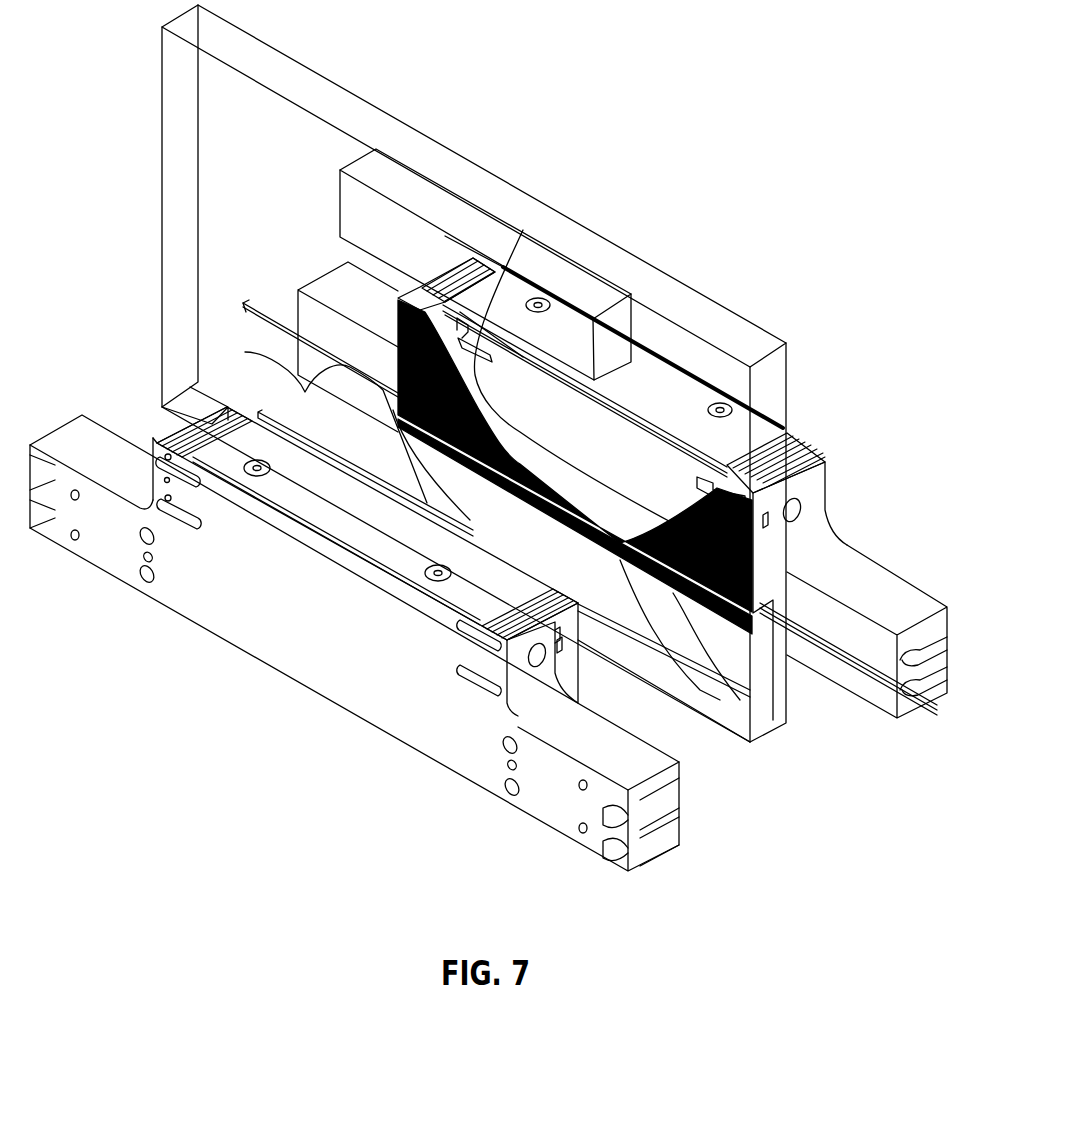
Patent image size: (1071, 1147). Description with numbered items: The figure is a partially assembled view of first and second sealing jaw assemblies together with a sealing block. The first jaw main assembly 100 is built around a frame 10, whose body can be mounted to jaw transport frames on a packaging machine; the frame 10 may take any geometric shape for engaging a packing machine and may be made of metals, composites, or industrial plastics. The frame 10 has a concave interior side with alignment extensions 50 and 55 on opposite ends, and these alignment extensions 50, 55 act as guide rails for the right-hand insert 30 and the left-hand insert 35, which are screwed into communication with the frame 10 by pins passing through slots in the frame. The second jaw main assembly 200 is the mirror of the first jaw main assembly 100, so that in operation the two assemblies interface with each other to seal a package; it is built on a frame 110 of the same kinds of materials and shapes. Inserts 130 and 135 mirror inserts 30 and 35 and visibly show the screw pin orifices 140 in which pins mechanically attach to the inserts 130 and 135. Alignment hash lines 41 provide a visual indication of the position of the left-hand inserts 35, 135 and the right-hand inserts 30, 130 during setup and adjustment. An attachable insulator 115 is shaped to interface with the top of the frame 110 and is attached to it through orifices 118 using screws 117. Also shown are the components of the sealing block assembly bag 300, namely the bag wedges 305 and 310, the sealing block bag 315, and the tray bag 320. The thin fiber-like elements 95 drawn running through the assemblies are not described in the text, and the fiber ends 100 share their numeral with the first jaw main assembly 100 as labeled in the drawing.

The frame 10 is at (875, 578).
The insert 30 is at (757, 558).
The insert 35 is at (255, 307).
The alignment hash lines 41 is at (802, 453).
The alignment extension 50 is at (707, 483).
The alignment extension 55 is at (468, 330).
The optical fiber 95 is at (275, 315).
The first jaw main assembly 100 is at (907, 717).
The frame 110 is at (583, 750).
The attachable insulator 115 is at (270, 480).
The screws 117 is at (241, 460).
The orifices 118 is at (187, 522).
The insert 130 is at (578, 675).
The insert 135 is at (190, 387).
The screw pin orifices 140 is at (178, 475).
The second jaw main assembly 200 is at (656, 862).
The sealing block assembly bag 300 is at (774, 742).
The bag wedge 305 is at (307, 405).
The bag wedge 310 is at (760, 688).
The sealing block bag 315 is at (313, 82).
The tray bag 320 is at (620, 318).